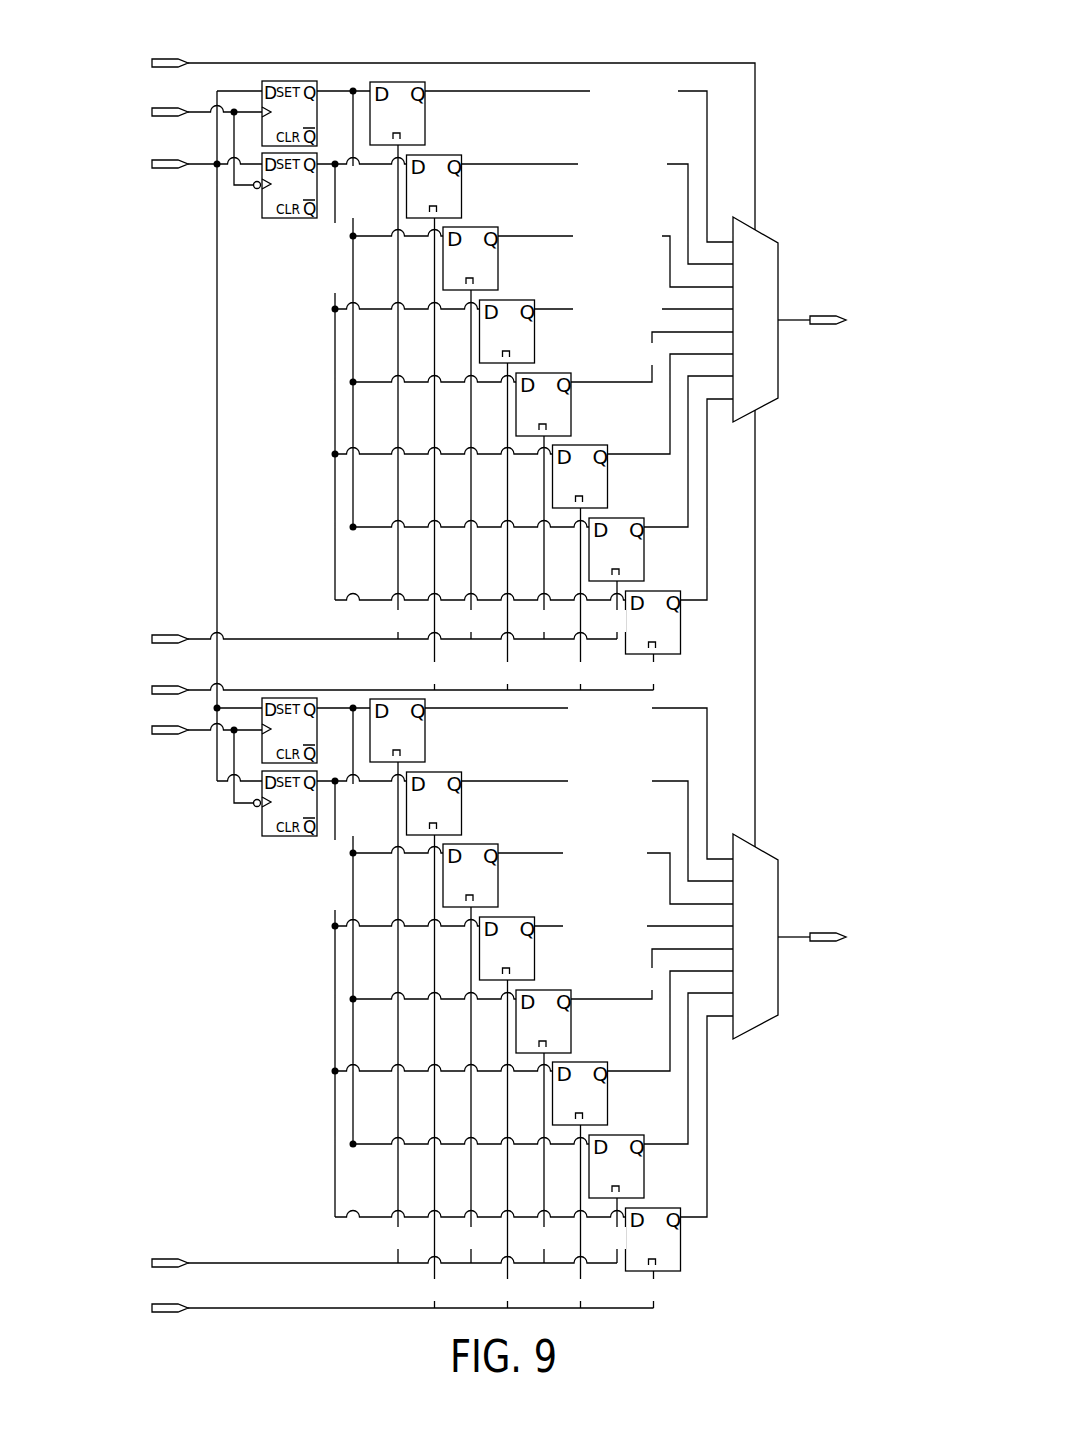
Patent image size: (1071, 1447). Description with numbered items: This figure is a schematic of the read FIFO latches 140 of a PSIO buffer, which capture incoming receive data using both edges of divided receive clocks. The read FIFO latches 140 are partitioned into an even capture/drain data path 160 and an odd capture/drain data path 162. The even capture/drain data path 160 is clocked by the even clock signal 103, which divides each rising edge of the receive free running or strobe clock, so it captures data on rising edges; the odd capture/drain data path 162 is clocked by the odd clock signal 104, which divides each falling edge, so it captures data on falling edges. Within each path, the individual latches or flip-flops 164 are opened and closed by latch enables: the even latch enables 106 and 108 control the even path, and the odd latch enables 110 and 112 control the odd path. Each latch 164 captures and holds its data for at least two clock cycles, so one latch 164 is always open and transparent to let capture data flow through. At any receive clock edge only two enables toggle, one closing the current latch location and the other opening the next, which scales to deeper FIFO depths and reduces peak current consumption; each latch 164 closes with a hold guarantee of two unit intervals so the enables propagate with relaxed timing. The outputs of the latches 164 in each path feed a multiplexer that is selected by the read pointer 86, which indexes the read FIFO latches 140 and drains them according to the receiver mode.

The read pointer 86 is at (212, 62).
The even clock signal 103 is at (202, 111).
The odd clock signal 104 is at (202, 733).
The even latch enable 106 is at (202, 637).
The even latch enable 108 is at (202, 688).
The odd latch enable 110 is at (205, 1261).
The odd latch enable 112 is at (207, 1310).
The read FIFO latches 140 is at (646, 30).
The even capture/drain data path 160 is at (830, 250).
The odd capture/drain data path 162 is at (830, 867).
The latch or flip-flop 164 is at (425, 113).